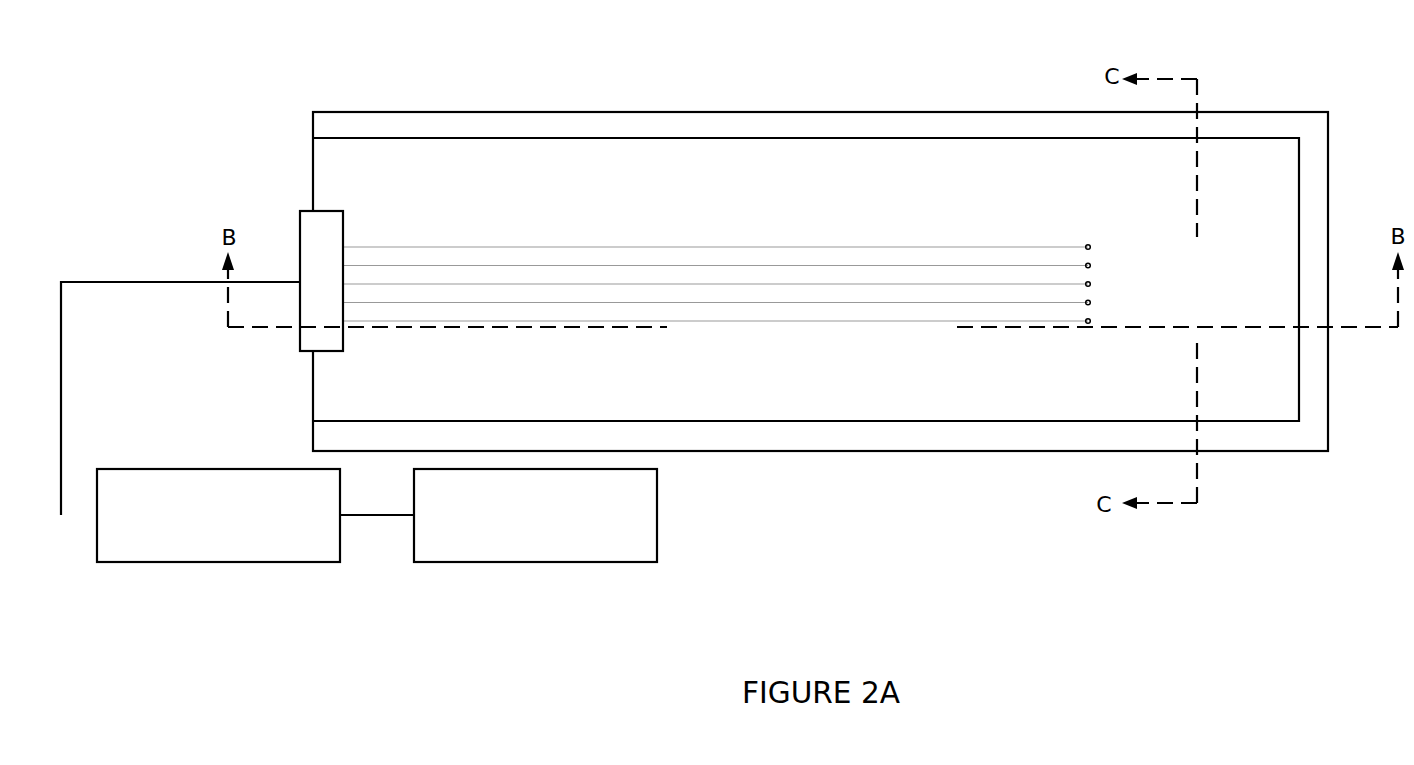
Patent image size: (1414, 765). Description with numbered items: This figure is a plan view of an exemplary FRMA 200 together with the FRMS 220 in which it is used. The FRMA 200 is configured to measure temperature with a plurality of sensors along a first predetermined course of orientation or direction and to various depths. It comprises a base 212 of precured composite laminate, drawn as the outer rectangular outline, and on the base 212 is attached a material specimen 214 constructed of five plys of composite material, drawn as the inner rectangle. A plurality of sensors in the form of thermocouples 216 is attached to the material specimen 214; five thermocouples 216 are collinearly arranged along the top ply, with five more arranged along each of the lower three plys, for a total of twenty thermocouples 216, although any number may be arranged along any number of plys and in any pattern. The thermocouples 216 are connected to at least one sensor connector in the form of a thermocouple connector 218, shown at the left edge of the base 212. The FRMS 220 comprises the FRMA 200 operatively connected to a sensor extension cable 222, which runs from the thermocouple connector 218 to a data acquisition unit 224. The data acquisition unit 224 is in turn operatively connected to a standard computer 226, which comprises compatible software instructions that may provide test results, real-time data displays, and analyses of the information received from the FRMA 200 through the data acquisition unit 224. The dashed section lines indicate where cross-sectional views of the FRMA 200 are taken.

The FRMA 200 is at (206, 170).
The base 212 is at (1313, 225).
The material specimen 214 is at (1287, 298).
The thermocouples 216 is at (1055, 362).
The thermocouple connector 218 is at (322, 243).
The FRMS 220 is at (66, 546).
The sensor extension cable 222 is at (200, 282).
The data acquisition unit 224 is at (218, 563).
The computer 226 is at (553, 563).